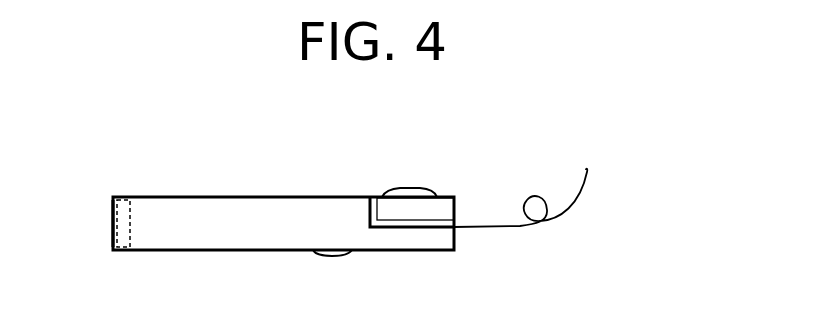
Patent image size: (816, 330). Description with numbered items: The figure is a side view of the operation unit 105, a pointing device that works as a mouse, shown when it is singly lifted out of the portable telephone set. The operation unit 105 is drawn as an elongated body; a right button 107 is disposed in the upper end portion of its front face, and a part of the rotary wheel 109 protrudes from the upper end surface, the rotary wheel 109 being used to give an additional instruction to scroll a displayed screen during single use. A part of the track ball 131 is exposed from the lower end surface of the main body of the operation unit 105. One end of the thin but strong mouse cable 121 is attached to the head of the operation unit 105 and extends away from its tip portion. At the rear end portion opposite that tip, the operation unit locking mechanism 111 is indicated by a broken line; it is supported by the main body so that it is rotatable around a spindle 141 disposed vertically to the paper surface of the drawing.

The operation unit 105 is at (258, 210).
The operation unit locking mechanism 111 is at (131, 197).
The spindle 141 is at (112, 213).
The right button 107 is at (440, 213).
The rotary wheel 109 is at (406, 190).
The track ball 131 is at (336, 253).
The mouse cable 121 is at (585, 205).